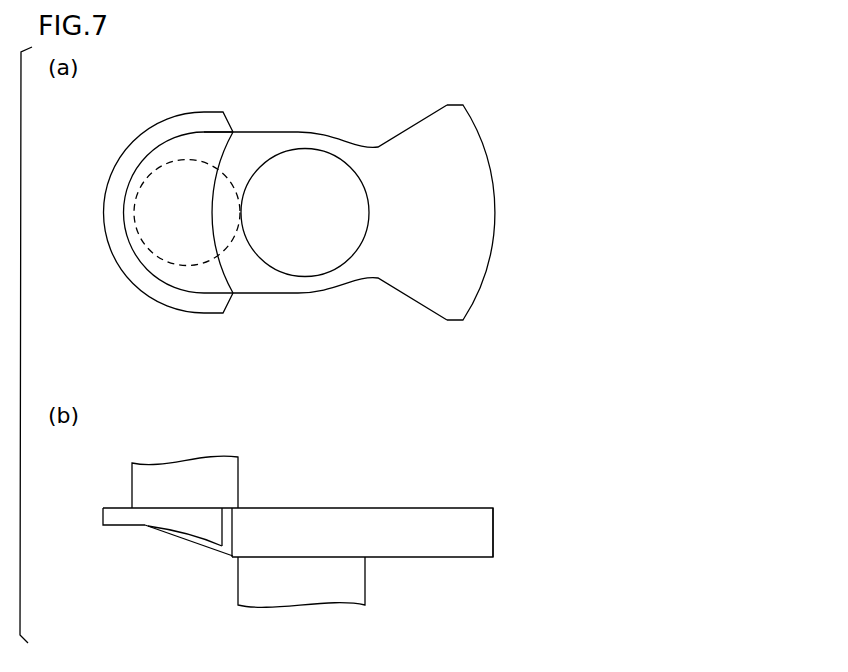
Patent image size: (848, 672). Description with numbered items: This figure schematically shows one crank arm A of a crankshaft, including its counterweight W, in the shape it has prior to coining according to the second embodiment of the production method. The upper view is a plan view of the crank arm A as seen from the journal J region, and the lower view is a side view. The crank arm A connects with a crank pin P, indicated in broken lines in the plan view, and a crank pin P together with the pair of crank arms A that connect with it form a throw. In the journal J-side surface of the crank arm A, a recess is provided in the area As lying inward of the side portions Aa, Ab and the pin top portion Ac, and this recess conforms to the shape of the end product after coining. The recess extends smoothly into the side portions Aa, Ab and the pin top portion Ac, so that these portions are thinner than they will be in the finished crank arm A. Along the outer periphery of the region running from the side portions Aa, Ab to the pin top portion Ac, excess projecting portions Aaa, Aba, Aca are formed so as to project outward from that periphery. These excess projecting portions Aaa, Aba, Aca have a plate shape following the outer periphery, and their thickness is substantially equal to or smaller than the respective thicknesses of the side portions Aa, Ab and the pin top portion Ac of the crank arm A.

The crank arm A is at (265, 132).
The counterweight W is at (467, 122).
The journal J is at (320, 277).
The crank pin P is at (222, 245).
The excess projecting portion Aca is at (112, 202).
The pin top portion Ac is at (128, 218).
The excess projecting portion Aaa is at (200, 112).
The excess projecting portion Aba is at (203, 317).
The side portion Ab is at (213, 293).
The side portion Aa is at (212, 138).
The area inward of side portions and pin top portion As is at (187, 240).